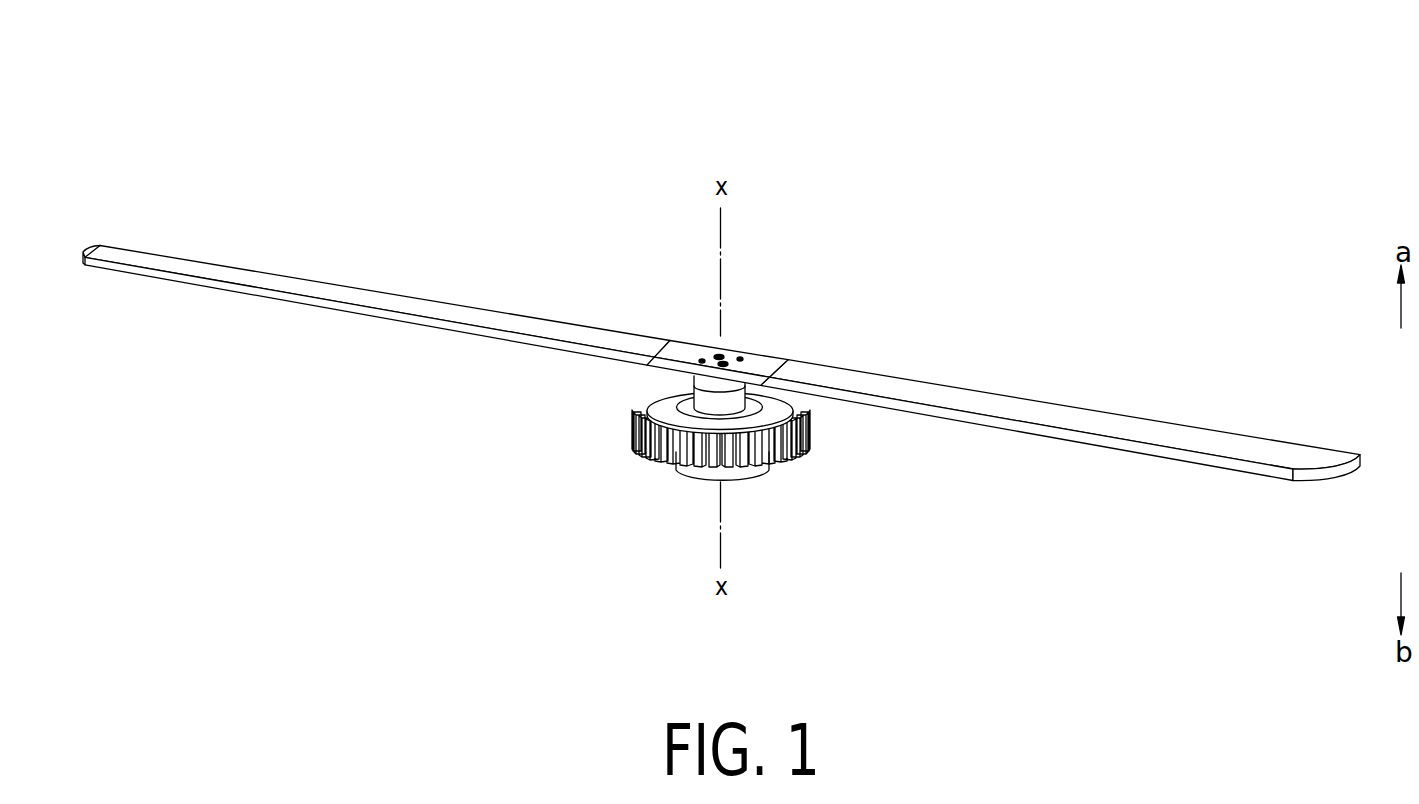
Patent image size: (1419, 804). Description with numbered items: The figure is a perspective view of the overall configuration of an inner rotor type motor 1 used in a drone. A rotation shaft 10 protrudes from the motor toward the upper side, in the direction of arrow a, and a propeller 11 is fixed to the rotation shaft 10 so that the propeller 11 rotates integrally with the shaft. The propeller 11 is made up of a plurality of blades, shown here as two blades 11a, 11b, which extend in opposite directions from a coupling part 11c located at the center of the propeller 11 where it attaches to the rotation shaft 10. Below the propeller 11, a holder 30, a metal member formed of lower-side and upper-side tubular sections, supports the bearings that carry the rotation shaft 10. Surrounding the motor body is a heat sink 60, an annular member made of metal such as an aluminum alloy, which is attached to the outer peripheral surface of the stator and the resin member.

The motor 1 is at (663, 70).
The rotation shaft 10 is at (694, 392).
The propeller 11 is at (721, 331).
The blade 11a is at (307, 288).
The blade 11b is at (1210, 440).
The coupling part 11c is at (757, 358).
The holder 30 is at (743, 480).
The heat sink 60 is at (632, 448).